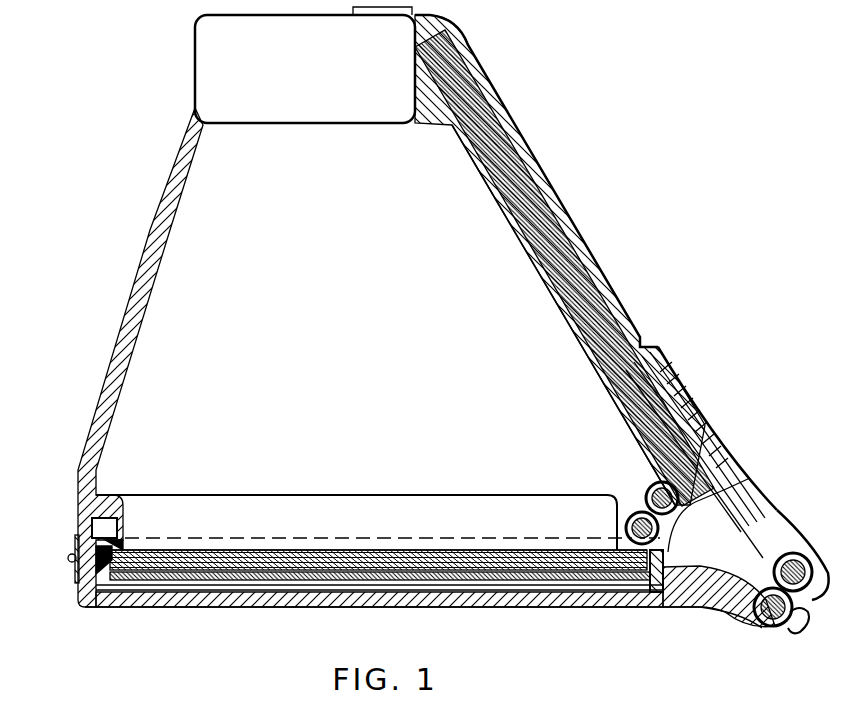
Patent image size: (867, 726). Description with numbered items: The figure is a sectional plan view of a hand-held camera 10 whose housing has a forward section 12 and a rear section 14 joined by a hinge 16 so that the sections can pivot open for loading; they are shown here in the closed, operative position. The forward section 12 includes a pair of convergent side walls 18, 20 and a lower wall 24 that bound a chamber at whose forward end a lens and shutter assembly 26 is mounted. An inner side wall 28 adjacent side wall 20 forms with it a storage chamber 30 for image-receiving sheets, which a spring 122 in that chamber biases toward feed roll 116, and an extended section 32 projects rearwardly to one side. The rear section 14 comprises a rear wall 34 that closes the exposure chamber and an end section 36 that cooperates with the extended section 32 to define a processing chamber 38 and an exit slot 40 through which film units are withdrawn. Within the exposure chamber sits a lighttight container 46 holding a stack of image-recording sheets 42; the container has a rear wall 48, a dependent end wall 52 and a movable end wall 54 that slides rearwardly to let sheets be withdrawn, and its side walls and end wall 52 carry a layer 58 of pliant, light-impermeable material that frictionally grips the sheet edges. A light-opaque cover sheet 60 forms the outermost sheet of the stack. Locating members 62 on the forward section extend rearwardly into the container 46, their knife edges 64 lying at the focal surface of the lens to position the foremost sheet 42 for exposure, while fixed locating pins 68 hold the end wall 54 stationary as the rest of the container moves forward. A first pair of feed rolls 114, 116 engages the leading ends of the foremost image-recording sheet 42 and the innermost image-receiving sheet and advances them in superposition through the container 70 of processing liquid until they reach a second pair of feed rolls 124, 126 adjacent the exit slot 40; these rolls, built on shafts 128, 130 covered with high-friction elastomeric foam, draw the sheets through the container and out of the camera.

The camera 10 is at (160, 160).
The forward housing section 12 is at (574, 207).
The rear housing section 14 is at (545, 612).
The hinge 16 is at (68, 558).
The side wall 18 is at (152, 250).
The side wall 20 is at (668, 372).
The lower wall 24 is at (343, 329).
The lens and shutter assembly 26 is at (193, 60).
The inner side wall 28 is at (543, 275).
The storage chamber 30 is at (660, 405).
The extended section 32 is at (780, 520).
The rear wall 34 is at (150, 597).
The end section 36 is at (719, 595).
The processing chamber 38 is at (748, 512).
The exit slot 40 is at (810, 605).
The image-recording sheet 42 is at (215, 560).
The lighttight container 46 is at (365, 575).
The rear wall 48 is at (260, 587).
The dependent end wall 52 is at (95, 540).
The movable end wall 54 is at (650, 597).
The layer 58 is at (95, 576).
The cover sheet 60 is at (182, 550).
The locating members 62 is at (348, 529).
The knife edges 64 is at (122, 548).
The locating pins 68 is at (663, 545).
The container 70 is at (695, 568).
The feed roll 114 is at (632, 508).
The feed roll 116 is at (645, 482).
The spring 122 is at (683, 438).
The feed roll 124 is at (782, 628).
The feed roll 126 is at (805, 560).
The shaft 128 is at (760, 628).
The shaft 130 is at (828, 582).